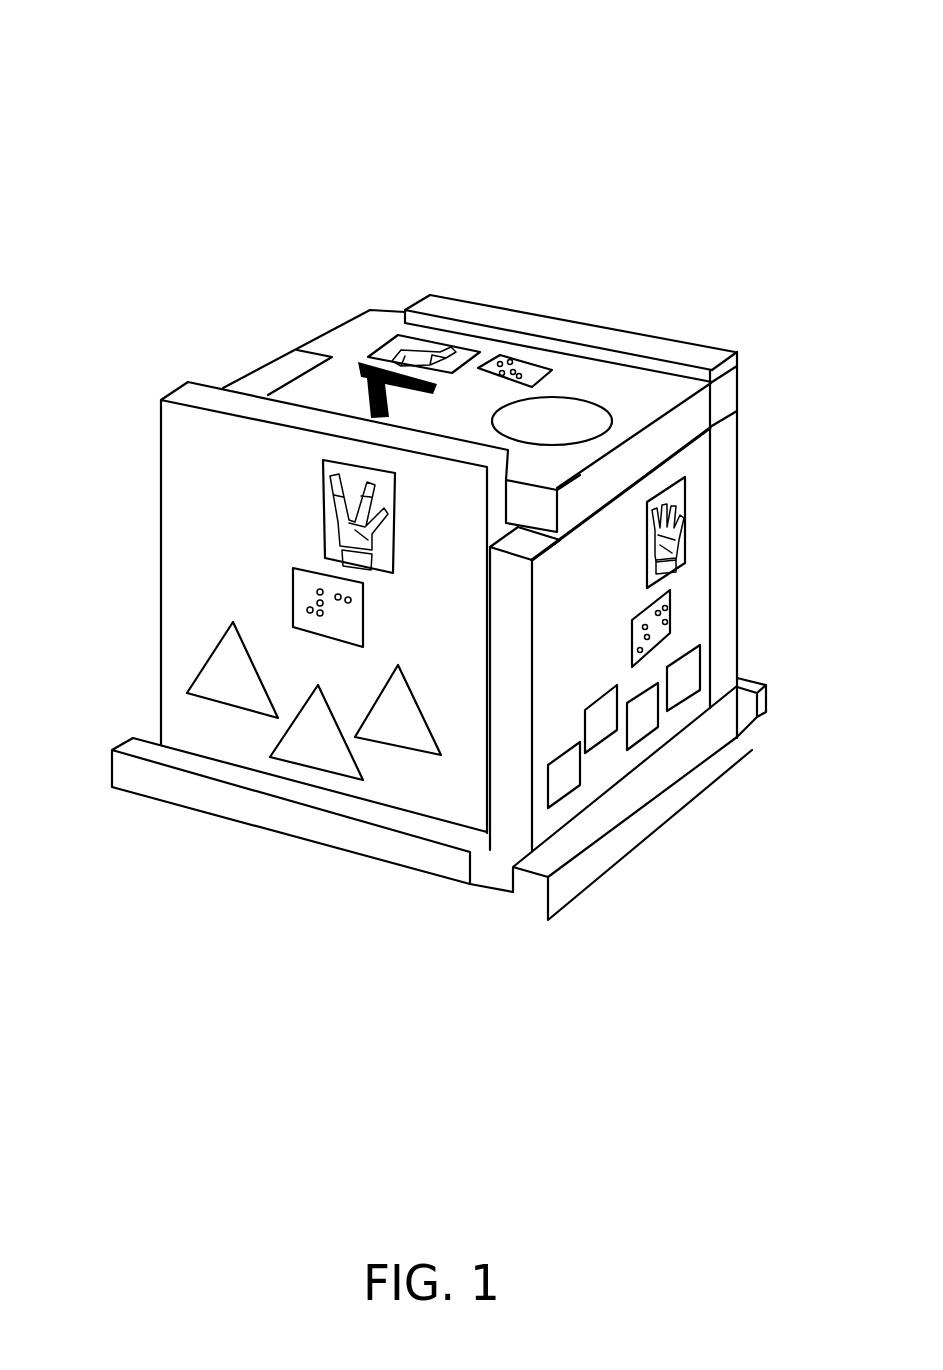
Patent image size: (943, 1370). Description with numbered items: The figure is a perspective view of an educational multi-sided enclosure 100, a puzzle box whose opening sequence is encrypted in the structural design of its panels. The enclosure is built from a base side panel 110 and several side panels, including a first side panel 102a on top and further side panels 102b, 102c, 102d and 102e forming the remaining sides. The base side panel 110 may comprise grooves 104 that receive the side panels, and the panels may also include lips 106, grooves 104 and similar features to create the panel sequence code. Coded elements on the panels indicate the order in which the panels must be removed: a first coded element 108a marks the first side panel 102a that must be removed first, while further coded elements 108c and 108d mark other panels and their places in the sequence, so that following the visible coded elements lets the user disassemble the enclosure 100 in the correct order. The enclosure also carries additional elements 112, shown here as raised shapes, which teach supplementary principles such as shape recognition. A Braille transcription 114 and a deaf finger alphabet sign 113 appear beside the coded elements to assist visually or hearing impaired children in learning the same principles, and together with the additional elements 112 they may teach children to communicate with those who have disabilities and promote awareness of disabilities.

The multi-sided enclosure 100 is at (86, 75).
The first side panel 102a is at (352, 337).
The side panel 102b is at (267, 380).
The side panel 102c is at (193, 397).
The side panel 102d is at (687, 583).
The side panel 102e is at (462, 308).
The groove 104 is at (730, 393).
The lip 106 is at (516, 852).
The first coded element 108a is at (435, 392).
The coded element 108c is at (192, 470).
The coded element 108d is at (560, 617).
The base side panel 110 is at (145, 757).
The additional element 112 is at (290, 742).
The deaf finger alphabet sign 113 is at (397, 550).
The Braille transcription 114 is at (549, 372).